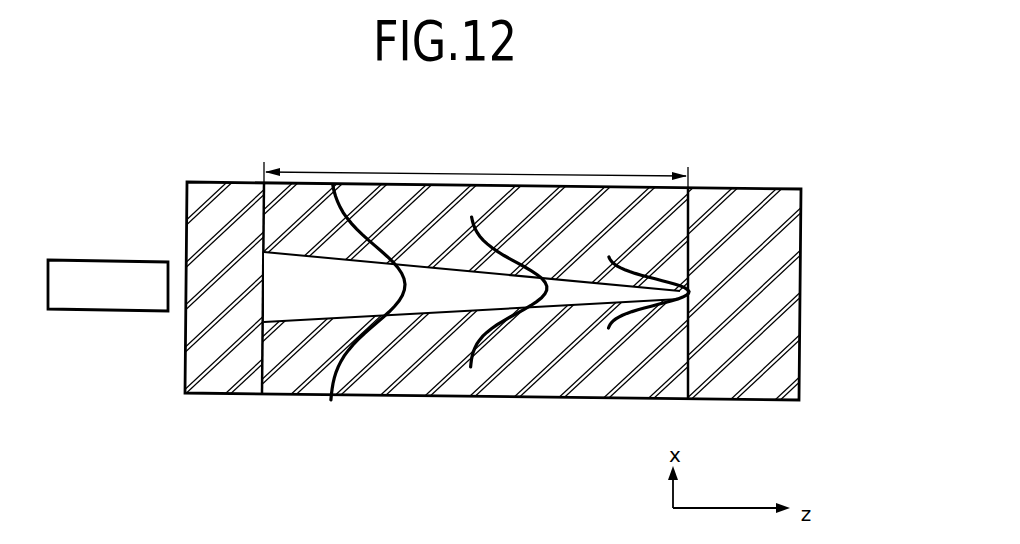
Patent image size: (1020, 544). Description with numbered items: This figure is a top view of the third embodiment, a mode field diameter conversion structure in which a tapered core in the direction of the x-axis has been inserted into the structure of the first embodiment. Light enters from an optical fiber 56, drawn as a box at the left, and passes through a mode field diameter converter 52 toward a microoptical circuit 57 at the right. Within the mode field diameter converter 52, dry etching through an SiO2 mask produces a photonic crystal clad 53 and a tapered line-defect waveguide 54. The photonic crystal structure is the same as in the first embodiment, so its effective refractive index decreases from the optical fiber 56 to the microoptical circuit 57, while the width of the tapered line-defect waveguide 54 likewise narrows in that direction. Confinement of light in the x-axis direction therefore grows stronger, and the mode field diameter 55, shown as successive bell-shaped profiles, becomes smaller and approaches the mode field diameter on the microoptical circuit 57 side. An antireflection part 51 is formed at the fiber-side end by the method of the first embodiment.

The antireflection part 51 is at (229, 182).
The mode field diameter converter 52 is at (476, 167).
The photonic crystal clad 53 is at (298, 243).
The tapered line-defect waveguide 54 is at (452, 300).
The mode field diameter 55 is at (380, 183).
The optical fiber 56 is at (113, 270).
The microoptical circuit 57 is at (766, 189).